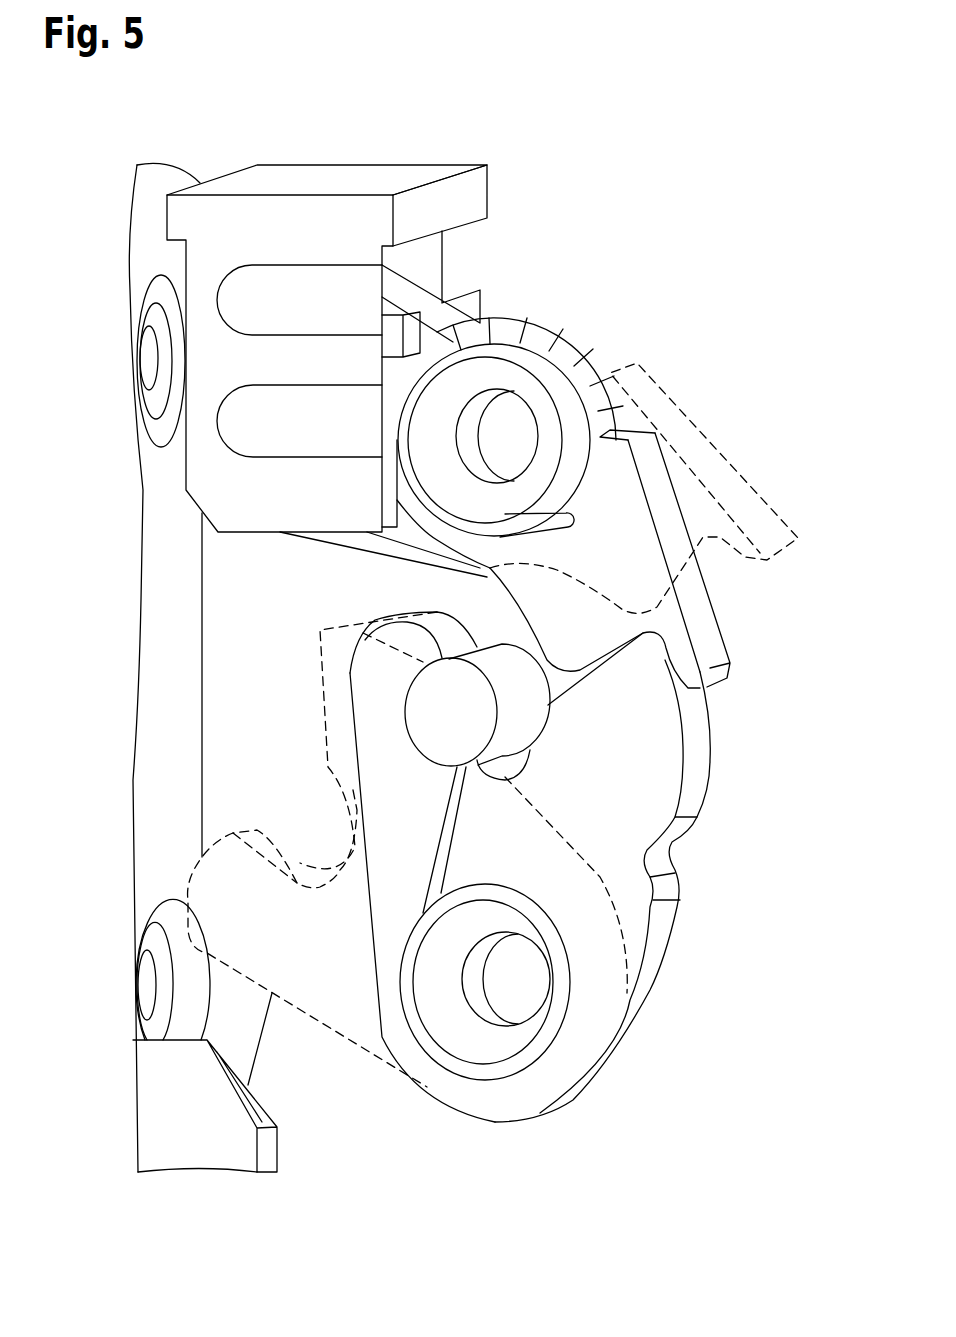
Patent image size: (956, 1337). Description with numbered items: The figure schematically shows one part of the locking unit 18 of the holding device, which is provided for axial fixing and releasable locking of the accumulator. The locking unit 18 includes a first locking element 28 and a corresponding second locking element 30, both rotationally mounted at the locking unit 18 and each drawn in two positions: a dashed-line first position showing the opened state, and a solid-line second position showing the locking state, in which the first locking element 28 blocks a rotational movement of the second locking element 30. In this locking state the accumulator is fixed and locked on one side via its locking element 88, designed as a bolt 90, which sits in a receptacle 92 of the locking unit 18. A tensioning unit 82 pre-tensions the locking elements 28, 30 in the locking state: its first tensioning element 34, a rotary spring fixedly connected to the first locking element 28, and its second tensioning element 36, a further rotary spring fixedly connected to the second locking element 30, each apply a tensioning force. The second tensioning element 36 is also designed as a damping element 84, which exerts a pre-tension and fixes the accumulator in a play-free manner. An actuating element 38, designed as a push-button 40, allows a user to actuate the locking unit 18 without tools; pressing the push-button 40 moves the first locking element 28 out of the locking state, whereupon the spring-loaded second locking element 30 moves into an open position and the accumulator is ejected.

The locking unit 18 is at (665, 154).
The actuating element 38 is at (327, 295).
The push-button 40 is at (385, 151).
The first tensioning element 34 is at (497, 357).
The tensioning unit 82 is at (587, 341).
The first locking element 28 is at (707, 628).
The second locking element 30 is at (653, 718).
The locking element 88 is at (616, 716).
The bolt 90 is at (517, 715).
The receptacle 92 is at (522, 748).
The second tensioning element 36 is at (447, 1033).
The damping element 84 is at (417, 1017).